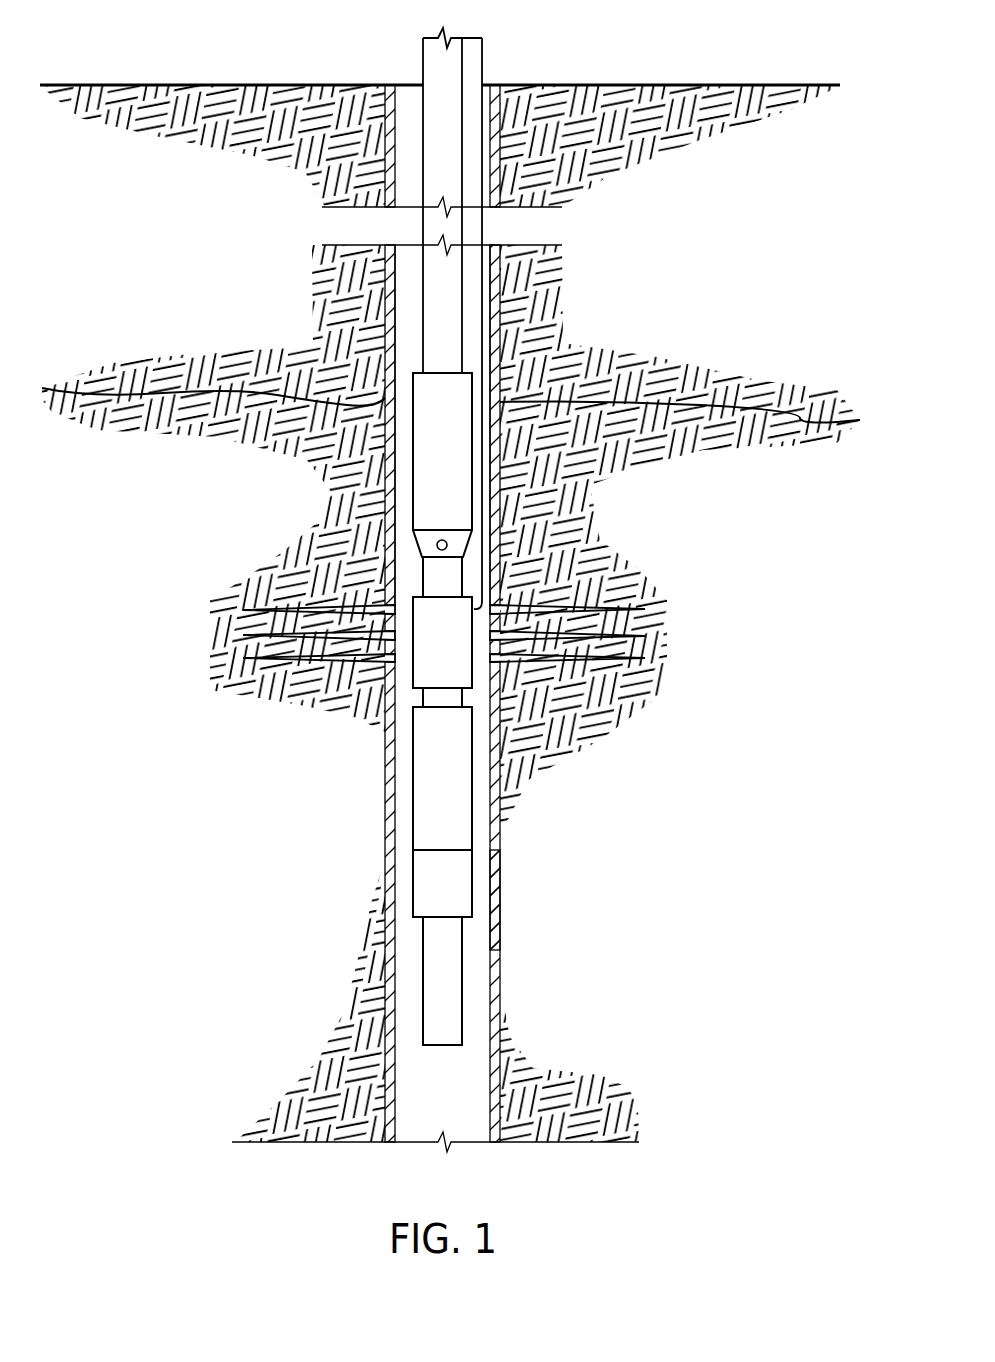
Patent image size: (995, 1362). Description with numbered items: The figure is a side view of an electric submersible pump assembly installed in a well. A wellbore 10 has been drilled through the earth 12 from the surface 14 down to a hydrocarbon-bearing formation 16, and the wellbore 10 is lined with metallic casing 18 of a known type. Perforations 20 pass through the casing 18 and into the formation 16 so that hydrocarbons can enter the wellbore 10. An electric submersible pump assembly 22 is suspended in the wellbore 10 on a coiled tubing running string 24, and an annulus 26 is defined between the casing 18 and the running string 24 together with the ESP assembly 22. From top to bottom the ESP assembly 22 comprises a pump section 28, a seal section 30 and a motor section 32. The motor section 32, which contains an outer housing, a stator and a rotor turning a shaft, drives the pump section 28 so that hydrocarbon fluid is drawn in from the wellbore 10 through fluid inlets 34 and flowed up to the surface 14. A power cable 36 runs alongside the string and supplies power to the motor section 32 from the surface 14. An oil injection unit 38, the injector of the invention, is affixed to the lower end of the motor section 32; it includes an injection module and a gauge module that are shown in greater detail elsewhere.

The wellbore 10 is at (520, 316).
The earth 12 is at (318, 145).
The surface 14 is at (183, 85).
The hydrocarbon-bearing formation 16 is at (533, 458).
The metallic casing 18 is at (389, 792).
The perforations 20 is at (243, 658).
The electric submersible pump assembly 22 is at (400, 720).
The coiled tubing running string 24 is at (432, 150).
The annulus 26 is at (478, 782).
The pump section 28 is at (430, 443).
The seal section 30 is at (462, 660).
The motor section 32 is at (427, 809).
The fluid inlets 34 is at (437, 545).
The power cable 36 is at (484, 550).
The oil injection unit 38 is at (495, 893).